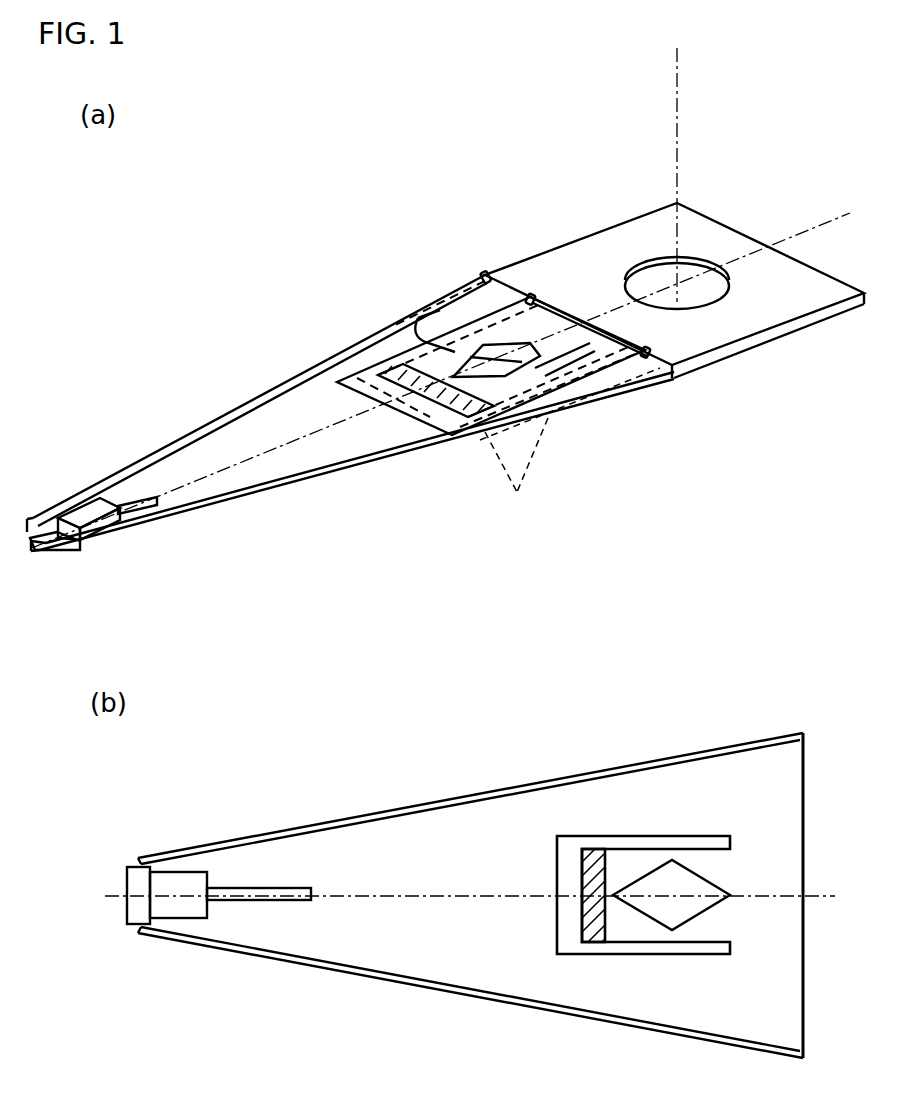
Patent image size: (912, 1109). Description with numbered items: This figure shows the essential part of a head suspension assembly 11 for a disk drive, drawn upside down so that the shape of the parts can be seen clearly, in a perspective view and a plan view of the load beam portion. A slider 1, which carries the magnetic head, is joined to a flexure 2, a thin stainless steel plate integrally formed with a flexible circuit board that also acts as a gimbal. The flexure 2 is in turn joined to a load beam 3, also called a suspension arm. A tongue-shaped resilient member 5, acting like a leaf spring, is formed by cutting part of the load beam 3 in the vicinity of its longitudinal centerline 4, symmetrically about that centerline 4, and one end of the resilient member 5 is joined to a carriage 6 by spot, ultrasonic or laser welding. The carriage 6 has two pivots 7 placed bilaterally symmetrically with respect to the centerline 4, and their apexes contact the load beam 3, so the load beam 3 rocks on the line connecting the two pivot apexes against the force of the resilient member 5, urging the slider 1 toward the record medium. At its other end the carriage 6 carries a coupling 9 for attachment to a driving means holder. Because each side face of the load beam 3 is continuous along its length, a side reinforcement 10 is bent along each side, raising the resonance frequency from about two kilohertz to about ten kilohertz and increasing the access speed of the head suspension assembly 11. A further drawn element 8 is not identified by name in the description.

The slider 1 is at (73, 512).
The flexure 2 is at (61, 546).
The load beam 3 is at (222, 443).
The longitudinal centerline 4 is at (610, 303).
The tongue-shaped resilient member 5 is at (432, 312).
The carriage 6 is at (632, 237).
The pivots 7 is at (570, 457).
The prism 8 is at (487, 322).
The coupling 9 is at (702, 292).
The side reinforcement 10 is at (254, 403).
The head suspension assembly 11 is at (272, 221).